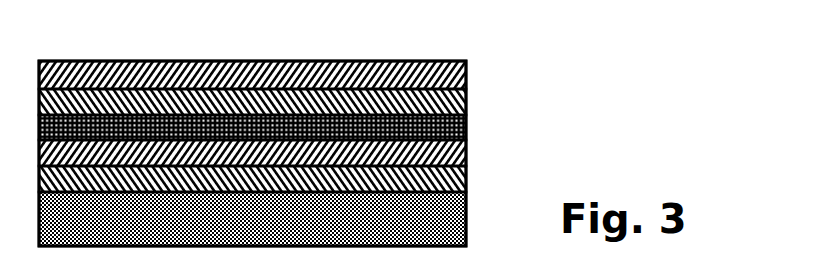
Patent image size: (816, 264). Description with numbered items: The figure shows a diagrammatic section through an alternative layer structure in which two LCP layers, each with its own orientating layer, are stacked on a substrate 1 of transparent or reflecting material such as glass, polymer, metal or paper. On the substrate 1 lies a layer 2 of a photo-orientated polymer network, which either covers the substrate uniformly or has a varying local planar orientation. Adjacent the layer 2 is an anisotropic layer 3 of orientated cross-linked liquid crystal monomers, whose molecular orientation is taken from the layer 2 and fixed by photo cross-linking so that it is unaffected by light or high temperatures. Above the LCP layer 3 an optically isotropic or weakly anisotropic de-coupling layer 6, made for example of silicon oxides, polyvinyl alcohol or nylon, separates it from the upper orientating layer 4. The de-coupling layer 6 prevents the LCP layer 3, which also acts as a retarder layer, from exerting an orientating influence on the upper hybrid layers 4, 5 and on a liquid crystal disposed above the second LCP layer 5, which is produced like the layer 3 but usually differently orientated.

The substrate 1 is at (445, 225).
The photo-orientated polymer network layer 2 is at (457, 170).
The anisotropic layer of orientated cross-linked liquid crystal monomers 3 is at (458, 142).
The upper orientating layer 4 is at (437, 98).
The second LCP layer 5 is at (405, 62).
The de-coupling layer 6 is at (456, 120).